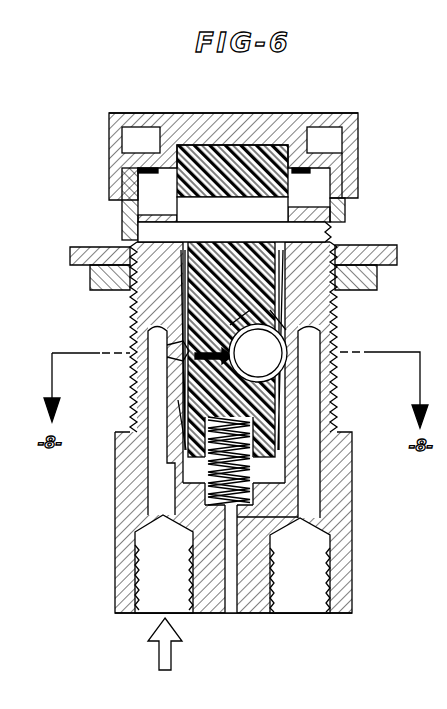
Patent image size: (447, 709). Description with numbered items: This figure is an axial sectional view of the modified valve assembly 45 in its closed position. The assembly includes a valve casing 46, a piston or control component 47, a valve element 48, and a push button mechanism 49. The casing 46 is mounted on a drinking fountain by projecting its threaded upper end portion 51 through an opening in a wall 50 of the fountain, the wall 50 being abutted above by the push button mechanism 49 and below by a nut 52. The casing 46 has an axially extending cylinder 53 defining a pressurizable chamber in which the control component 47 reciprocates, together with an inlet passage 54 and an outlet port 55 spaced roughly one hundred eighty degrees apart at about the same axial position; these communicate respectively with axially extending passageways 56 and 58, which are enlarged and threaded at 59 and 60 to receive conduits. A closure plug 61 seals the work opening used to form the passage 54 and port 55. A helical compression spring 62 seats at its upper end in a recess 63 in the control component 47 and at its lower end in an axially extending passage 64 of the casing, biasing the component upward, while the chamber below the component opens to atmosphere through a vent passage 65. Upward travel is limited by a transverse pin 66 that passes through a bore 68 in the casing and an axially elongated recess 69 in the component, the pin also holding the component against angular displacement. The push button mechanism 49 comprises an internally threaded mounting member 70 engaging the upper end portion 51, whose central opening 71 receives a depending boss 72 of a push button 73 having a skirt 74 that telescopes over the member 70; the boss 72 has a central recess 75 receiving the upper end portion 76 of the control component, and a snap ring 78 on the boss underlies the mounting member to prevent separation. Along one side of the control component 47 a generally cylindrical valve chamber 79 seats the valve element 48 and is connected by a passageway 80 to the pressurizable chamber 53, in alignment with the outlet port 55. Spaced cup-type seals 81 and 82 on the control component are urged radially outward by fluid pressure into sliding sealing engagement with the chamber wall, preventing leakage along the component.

The valve assembly 45 is at (138, 109).
The valve casing 46 is at (113, 520).
The control component 47 is at (134, 312).
The valve element 48 is at (318, 346).
The push button mechanism 49 is at (108, 128).
The wall 50 is at (78, 256).
The threaded upper end portion 51 is at (130, 318).
The nut 52 is at (92, 282).
The cylinder 53 is at (286, 312).
The inlet passage 54 is at (166, 358).
The outlet port 55 is at (284, 357).
The passageway 56 is at (150, 467).
The passageway 58 is at (312, 463).
The threaded enlargement 59 is at (133, 584).
The threaded enlargement 60 is at (328, 574).
The closure plug 61 is at (150, 338).
The helical compression spring 62 is at (254, 498).
The recess 63 is at (252, 455).
The axially extending passage 64 is at (255, 512).
The vent passage 65 is at (233, 608).
The pin 66 is at (322, 234).
The transverse bore 68 is at (133, 228).
The axially elongated recess 69 is at (282, 208).
The mounting member 70 is at (340, 180).
The central opening 71 is at (299, 165).
The boss 72 is at (170, 165).
The push button 73 is at (346, 126).
The skirt 74 is at (356, 148).
The central recess 75 is at (205, 150).
The upper end portion 76 is at (268, 145).
The snap ring 78 is at (136, 172).
The valve chamber 79 is at (282, 385).
The passageway 80 is at (183, 375).
The cup-type seal 81 is at (183, 412).
The cup-type seal 82 is at (292, 262).